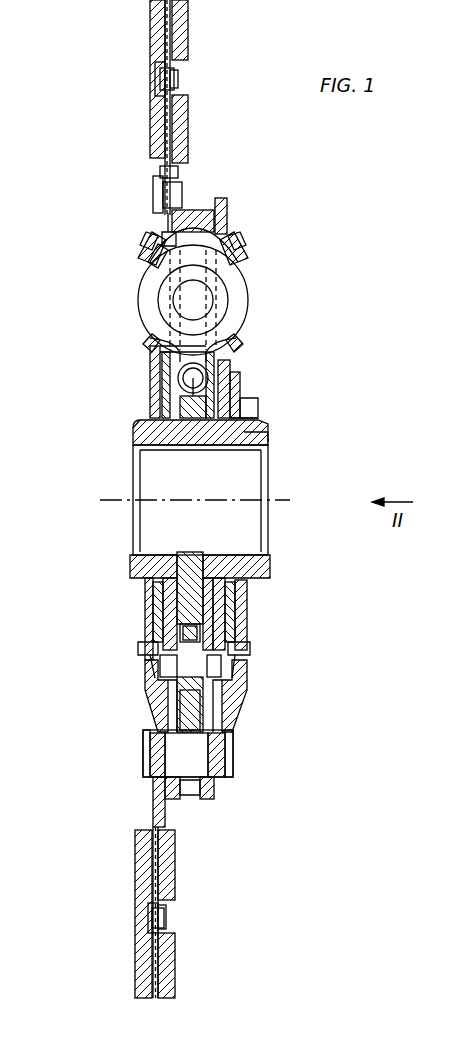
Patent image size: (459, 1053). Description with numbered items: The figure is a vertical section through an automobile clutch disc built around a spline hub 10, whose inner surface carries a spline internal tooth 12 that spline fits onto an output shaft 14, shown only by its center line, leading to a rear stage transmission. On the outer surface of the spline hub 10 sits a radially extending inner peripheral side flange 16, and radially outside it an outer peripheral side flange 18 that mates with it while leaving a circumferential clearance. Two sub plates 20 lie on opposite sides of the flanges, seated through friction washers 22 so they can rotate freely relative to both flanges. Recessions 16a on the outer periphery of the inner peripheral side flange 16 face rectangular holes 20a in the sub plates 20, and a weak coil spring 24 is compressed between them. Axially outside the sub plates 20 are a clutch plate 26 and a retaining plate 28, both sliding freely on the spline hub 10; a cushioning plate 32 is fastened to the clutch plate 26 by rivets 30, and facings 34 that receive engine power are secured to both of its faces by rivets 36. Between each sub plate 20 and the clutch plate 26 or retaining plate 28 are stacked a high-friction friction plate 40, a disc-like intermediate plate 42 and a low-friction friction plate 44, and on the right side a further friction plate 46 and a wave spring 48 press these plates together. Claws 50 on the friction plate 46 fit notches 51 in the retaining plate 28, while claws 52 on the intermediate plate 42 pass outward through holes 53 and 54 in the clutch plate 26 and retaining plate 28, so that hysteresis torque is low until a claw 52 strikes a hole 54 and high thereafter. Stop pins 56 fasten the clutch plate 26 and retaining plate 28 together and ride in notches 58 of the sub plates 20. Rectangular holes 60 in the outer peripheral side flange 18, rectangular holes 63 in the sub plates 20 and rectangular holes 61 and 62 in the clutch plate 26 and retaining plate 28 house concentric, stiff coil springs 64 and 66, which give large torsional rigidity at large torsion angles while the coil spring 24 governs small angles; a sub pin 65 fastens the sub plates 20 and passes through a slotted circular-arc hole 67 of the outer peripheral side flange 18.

The spline hub 10 is at (250, 430).
The spline internal tooth 12 is at (248, 455).
The output shaft 14 is at (278, 502).
The inner peripheral side flange 16 is at (245, 612).
The recession 16a is at (168, 400).
The outer peripheral side flange 18 is at (198, 226).
The sub plate 20 is at (168, 696).
The rectangular hole 20a is at (170, 375).
The friction washer 22 is at (196, 553).
The coil spring 24 is at (152, 420).
The clutch plate 26 is at (152, 248).
The retaining plate 28 is at (236, 238).
The rivet 30 is at (158, 190).
The cushioning plate 32 is at (170, 170).
The facing 34 is at (164, 36).
The rivet 36 is at (158, 90).
The friction plate 40 is at (152, 324).
The intermediate plate 42 is at (150, 350).
The friction plate 44 is at (145, 428).
The friction plate 46 is at (242, 549).
The wave spring 48 is at (246, 592).
The claw 50 is at (252, 402).
The notch 51 is at (262, 438).
The claw 52 is at (160, 664).
The hole 53 is at (148, 646).
The hole 54 is at (245, 641).
The stop pin 56 is at (232, 760).
The notch 58 is at (172, 796).
The rectangular hole 60 is at (248, 279).
The rectangular hole 61 is at (160, 266).
The rectangular hole 62 is at (240, 255).
The rectangular hole 63 is at (148, 240).
The coil spring 64 is at (150, 290).
The sub pin 65 is at (230, 680).
The coil spring 66 is at (172, 297).
The slotted circular-arc hole 67 is at (165, 684).